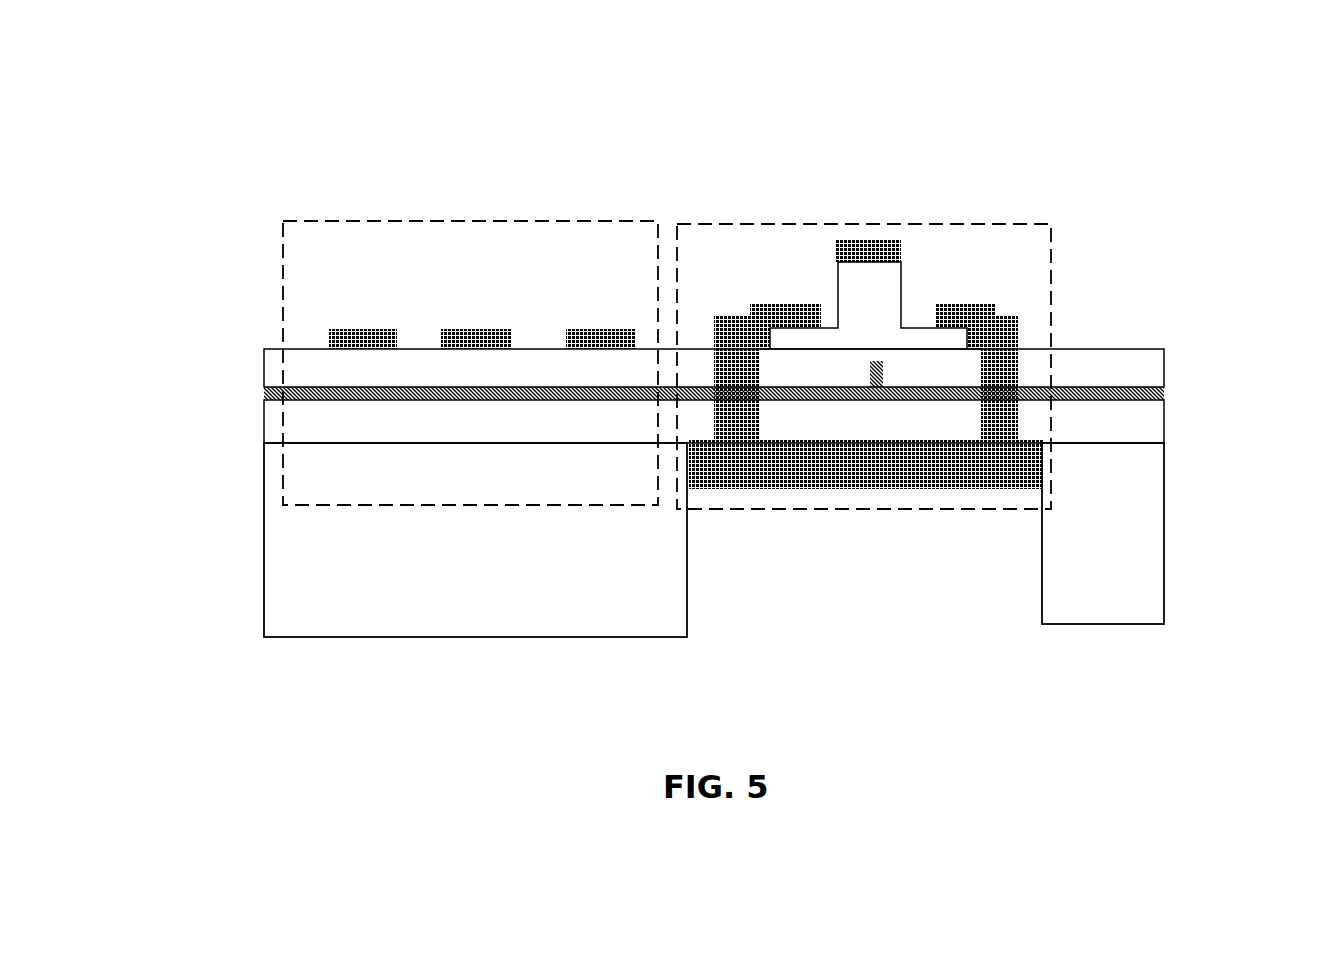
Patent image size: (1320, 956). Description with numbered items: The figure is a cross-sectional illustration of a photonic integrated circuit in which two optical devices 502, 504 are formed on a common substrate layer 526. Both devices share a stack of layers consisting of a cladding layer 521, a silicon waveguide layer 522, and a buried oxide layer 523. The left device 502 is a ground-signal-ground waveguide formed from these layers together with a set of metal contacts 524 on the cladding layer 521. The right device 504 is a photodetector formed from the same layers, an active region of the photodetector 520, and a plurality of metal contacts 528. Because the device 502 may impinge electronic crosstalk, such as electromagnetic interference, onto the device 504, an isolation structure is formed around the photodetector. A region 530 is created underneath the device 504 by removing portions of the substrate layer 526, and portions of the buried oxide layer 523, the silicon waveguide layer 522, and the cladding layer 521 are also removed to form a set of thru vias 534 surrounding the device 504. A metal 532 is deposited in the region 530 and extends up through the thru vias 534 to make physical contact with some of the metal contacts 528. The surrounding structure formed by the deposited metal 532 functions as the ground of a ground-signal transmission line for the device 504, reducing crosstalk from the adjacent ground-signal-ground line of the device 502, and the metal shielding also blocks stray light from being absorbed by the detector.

The device 502 is at (283, 219).
The device 504 is at (1051, 224).
The active region of the photodetector 520 is at (865, 300).
The cladding layer 521 is at (1090, 362).
The silicon waveguide layer 522 is at (1128, 397).
The buried oxide layer 523 is at (1143, 420).
The metal contacts 524 is at (636, 327).
The substrate layer 526 is at (292, 560).
The metal contacts 528 is at (967, 315).
The region 530 is at (995, 598).
The metal 532 is at (827, 467).
The thru vias 534 is at (714, 373).